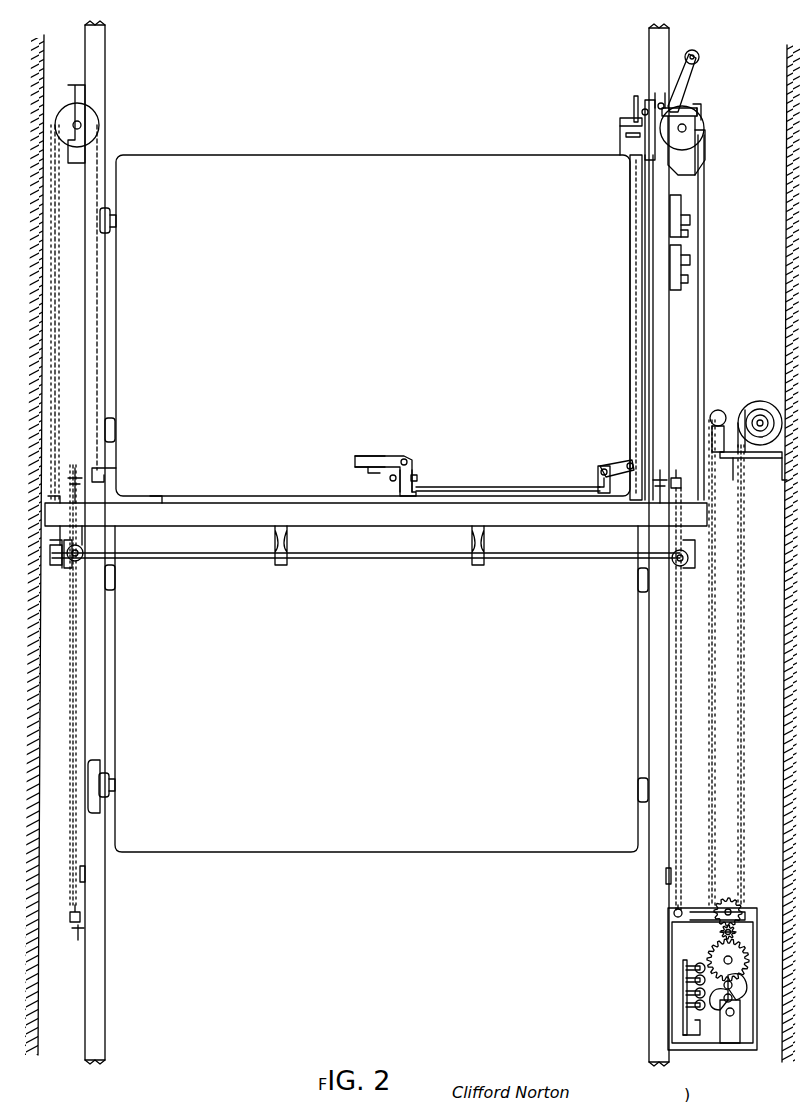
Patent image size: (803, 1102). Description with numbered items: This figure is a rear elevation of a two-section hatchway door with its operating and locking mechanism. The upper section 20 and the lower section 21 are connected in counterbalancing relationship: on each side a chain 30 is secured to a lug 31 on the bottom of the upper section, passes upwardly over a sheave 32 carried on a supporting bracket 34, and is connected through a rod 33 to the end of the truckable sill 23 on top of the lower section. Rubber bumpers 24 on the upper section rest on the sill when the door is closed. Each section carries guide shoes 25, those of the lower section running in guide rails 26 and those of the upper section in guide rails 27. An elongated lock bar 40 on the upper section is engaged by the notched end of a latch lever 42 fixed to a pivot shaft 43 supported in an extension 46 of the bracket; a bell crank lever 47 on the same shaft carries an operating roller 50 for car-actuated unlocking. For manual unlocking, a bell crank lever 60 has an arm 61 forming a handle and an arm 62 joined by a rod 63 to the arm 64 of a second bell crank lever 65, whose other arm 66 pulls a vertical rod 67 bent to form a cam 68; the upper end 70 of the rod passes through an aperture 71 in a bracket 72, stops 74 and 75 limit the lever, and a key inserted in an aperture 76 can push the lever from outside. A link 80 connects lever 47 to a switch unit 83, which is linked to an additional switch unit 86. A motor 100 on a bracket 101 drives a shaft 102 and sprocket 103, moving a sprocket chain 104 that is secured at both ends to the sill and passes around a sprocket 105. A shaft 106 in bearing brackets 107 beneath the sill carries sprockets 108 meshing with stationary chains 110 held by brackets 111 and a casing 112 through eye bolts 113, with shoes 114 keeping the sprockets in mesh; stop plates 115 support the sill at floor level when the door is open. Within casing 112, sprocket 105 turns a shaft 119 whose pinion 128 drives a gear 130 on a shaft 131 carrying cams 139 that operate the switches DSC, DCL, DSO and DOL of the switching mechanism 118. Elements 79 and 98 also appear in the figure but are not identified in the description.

The upper section 20 is at (373, 325).
The lower section 21 is at (376, 689).
The truckable sill 23 is at (230, 526).
The rubber bumpers 24 is at (165, 500).
The guide shoes 25 is at (110, 216).
The guide rails 26 is at (102, 770).
The guide rails 27 is at (105, 128).
The chain 30 is at (92, 350).
The lug 31 is at (108, 474).
The sheave 32 is at (70, 110).
The rod 33 is at (58, 258).
The supporting bracket 34 is at (78, 85).
The lock bar 40 is at (645, 388).
The latch lever 42 is at (648, 106).
The pivot shaft 43 is at (702, 112).
The extension 46 is at (706, 136).
The bell crank lever 47 is at (692, 85).
The operating roller 50 is at (698, 54).
The bell crank lever 60 is at (397, 456).
The arm 61 is at (364, 456).
The arm 62 is at (413, 468).
The rod 63 is at (493, 487).
The arm 64 is at (598, 478).
The second bell crank lever 65 is at (603, 469).
The arm 66 is at (618, 464).
The vertical rod 67 is at (630, 306).
The cam 68 is at (620, 126).
The upper end 70 is at (643, 111).
The aperture 71 is at (640, 119).
The bracket 72 is at (636, 124).
The stop 74 is at (390, 479).
The stop 75 is at (418, 478).
The aperture 76 is at (368, 472).
The stop 79 is at (638, 135).
The link 80 is at (705, 203).
The switch unit 83 is at (678, 195).
The additional switch unit 86 is at (676, 292).
The motor support 98 is at (736, 401).
The motor 100 is at (758, 401).
The bracket 101 is at (763, 458).
The shaft 102 is at (762, 415).
The sprocket 103 is at (720, 410).
The sprocket chain 104 is at (743, 602).
The sprocket 105 is at (729, 898).
The shaft 106 is at (422, 559).
The bearing brackets 107 is at (480, 562).
The sprocket 108 is at (683, 568).
The stationary chain 110 is at (72, 713).
The brackets 111 is at (76, 468).
The casing 112 is at (685, 905).
The eye bolts 113 is at (72, 918).
The shoe 114 is at (70, 580).
The stop plates 115 is at (86, 875).
The switching mechanism 118 is at (695, 962).
The shaft 119 is at (736, 932).
The pinion 128 is at (721, 932).
The gear 130 is at (746, 953).
The shaft 131 is at (731, 1021).
The cams 139 is at (744, 988).
The switch DOL is at (700, 968).
The switch DSO is at (700, 980).
The switch DCL is at (700, 993).
The switch DSC is at (700, 1005).